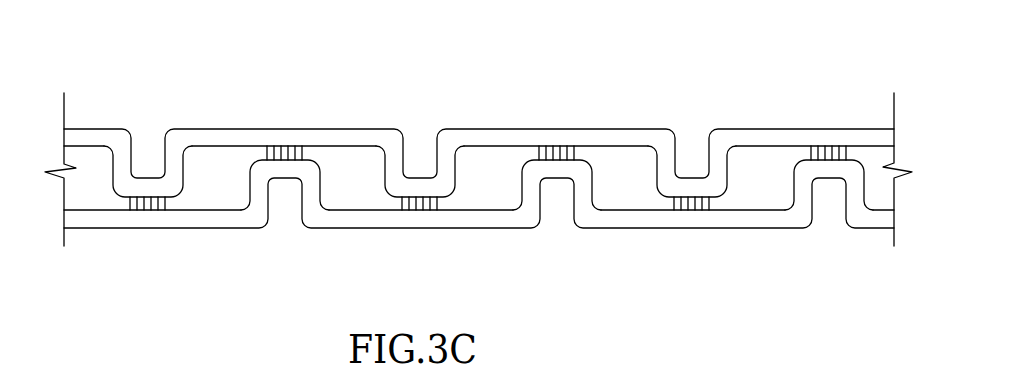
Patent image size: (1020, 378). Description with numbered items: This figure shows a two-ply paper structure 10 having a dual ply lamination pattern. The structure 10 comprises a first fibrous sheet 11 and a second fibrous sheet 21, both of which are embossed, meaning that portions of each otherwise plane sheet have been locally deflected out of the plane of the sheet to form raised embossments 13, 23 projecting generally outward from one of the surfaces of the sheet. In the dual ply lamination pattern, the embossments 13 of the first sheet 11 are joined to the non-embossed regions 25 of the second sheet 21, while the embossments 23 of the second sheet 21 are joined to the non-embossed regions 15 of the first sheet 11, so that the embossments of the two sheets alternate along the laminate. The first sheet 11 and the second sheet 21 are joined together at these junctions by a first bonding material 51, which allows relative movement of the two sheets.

The structure 10 is at (150, 56).
The first fibrous sheet 11 is at (312, 81).
The embossments 13 is at (421, 178).
The non-embossed regions 15 is at (557, 127).
The second fibrous sheet 21 is at (328, 256).
The embossments 23 is at (557, 182).
The non-embossed regions 25 is at (692, 230).
The first bonding material 51 is at (744, 198).